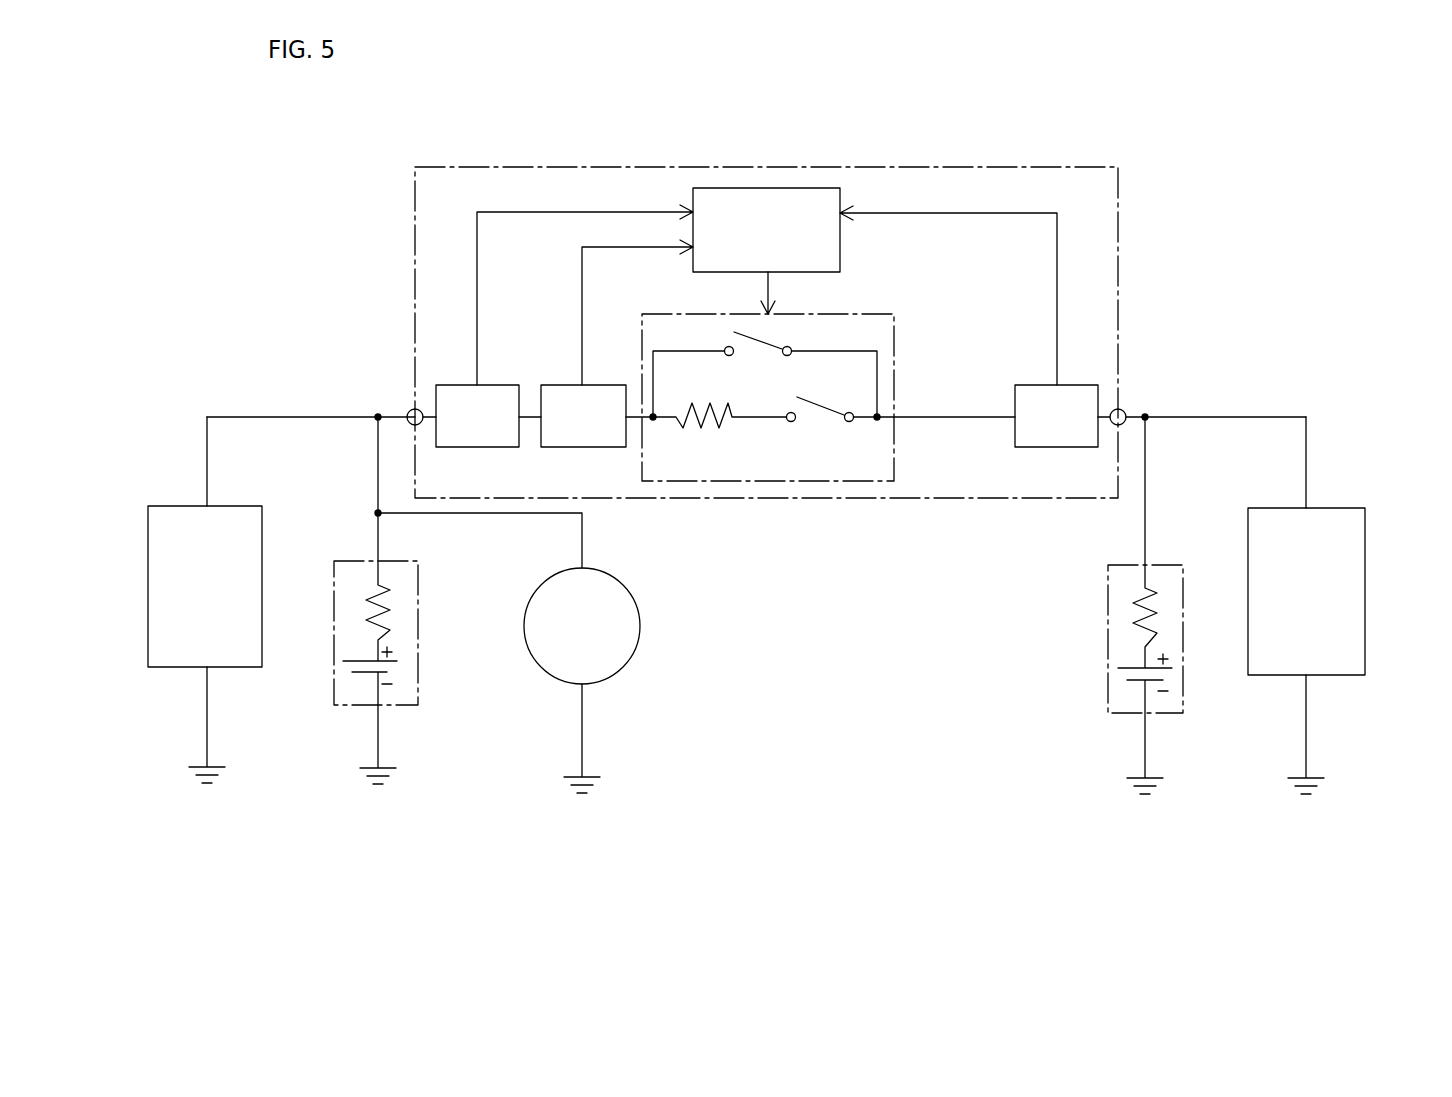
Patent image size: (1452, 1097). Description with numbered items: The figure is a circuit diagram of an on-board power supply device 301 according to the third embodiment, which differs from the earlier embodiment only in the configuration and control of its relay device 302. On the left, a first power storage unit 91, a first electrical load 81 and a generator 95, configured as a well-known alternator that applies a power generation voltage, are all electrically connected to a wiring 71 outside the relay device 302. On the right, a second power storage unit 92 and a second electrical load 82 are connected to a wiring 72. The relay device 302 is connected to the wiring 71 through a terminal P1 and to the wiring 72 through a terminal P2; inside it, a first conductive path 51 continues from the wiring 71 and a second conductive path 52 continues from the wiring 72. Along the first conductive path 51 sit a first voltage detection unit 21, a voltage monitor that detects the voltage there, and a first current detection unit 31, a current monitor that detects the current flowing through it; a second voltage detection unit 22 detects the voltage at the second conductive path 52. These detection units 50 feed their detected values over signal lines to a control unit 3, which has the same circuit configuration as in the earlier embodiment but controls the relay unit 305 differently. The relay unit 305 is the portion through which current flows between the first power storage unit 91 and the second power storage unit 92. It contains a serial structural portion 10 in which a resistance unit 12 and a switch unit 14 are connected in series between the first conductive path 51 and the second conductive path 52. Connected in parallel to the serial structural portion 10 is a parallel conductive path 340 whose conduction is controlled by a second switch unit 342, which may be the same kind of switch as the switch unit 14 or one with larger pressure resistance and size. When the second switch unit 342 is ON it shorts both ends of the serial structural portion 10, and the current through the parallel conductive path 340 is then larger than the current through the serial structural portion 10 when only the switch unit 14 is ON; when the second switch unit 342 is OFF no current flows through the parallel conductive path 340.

The control unit 3 is at (841, 196).
The serial structural portion 10 is at (765, 481).
The resistance unit 12 is at (712, 430).
The switch unit 14 is at (825, 409).
The first voltage detection unit 21 is at (500, 385).
The second voltage detection unit 22 is at (1033, 385).
The first current detection unit 31 is at (583, 387).
The monitoring unit 50 is at (767, 409).
The first conductive path 51 is at (531, 413).
The second conductive path 52 is at (1041, 409).
The wiring 71 is at (341, 415).
The wiring 72 is at (1203, 415).
The first electrical load 81 is at (147, 640).
The second electrical load 82 is at (1365, 645).
The first power storage unit 91 is at (333, 676).
The second power storage unit 92 is at (1183, 687).
The generator 95 is at (548, 673).
The on-board power supply device 301 is at (1243, 201).
The relay device 302 is at (1058, 166).
The relay unit 305 is at (832, 482).
The parallel conductive path 340 is at (799, 340).
The second switch unit 342 is at (773, 343).
The terminal P1 is at (419, 410).
The terminal P2 is at (1126, 410).